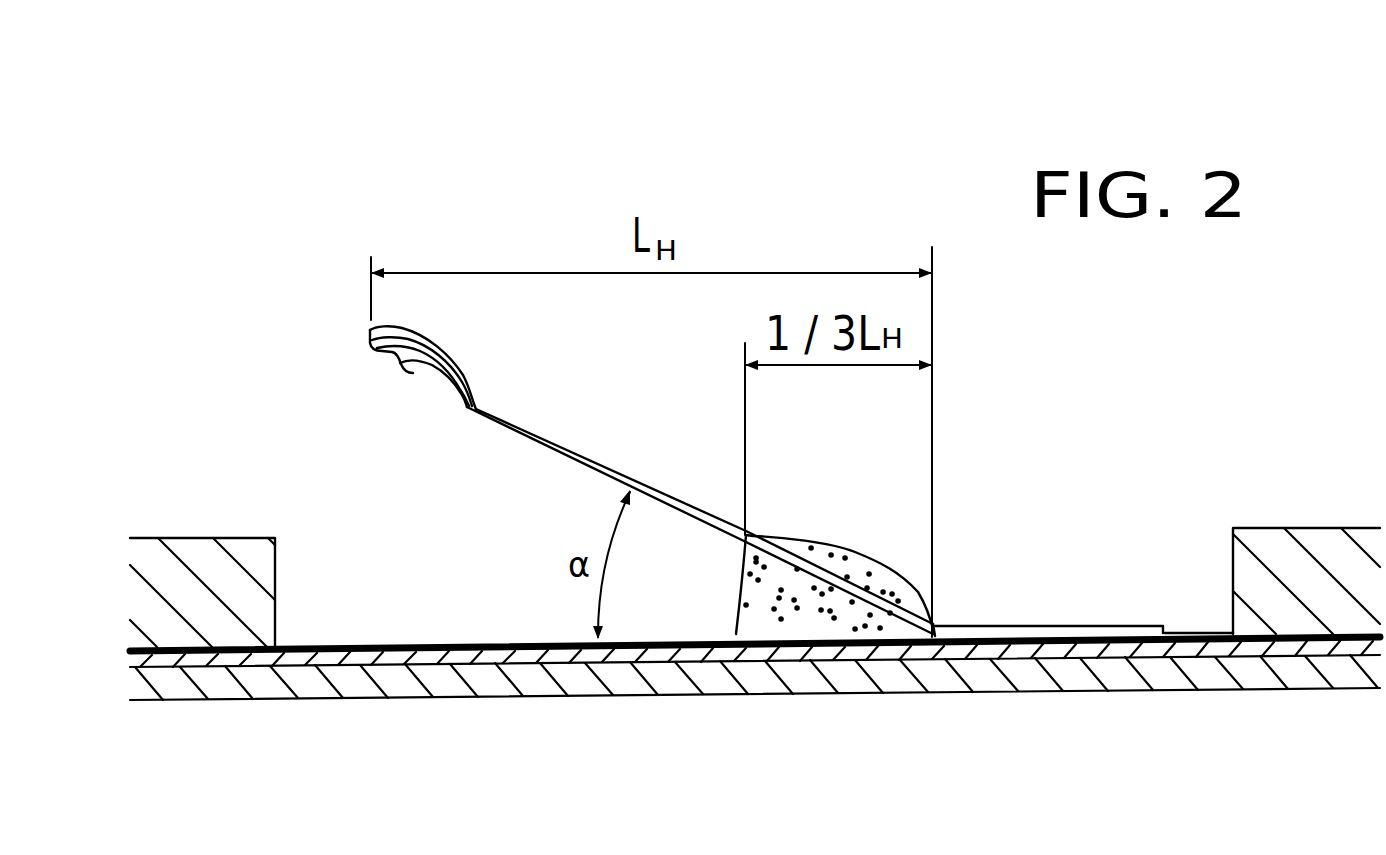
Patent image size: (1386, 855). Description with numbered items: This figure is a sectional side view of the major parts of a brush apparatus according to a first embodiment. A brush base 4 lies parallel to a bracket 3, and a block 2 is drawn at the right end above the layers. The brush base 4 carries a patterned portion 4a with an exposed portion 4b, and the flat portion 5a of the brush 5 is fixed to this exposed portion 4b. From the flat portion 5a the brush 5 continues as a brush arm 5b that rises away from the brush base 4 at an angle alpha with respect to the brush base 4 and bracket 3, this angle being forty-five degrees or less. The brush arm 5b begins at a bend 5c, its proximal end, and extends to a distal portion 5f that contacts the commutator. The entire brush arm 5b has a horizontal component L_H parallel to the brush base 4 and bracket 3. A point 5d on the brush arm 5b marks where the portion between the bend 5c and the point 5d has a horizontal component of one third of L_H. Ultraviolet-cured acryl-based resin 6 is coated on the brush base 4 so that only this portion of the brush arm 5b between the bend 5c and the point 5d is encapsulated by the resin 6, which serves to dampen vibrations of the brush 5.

The frame / housing 2 is at (1317, 560).
The bracket 3 is at (1197, 672).
The brush base 4 is at (1015, 655).
The patterned portion 4a is at (387, 643).
The exposed portion 4b is at (1197, 623).
The brush 5 is at (657, 424).
The flat portion 5a is at (1055, 626).
The brush arm 5b is at (590, 452).
The bend 5c is at (933, 633).
The point 5d is at (752, 530).
The distal portion 5f is at (373, 320).
The ultraviolet-cured acryl-based resin 6 is at (783, 620).